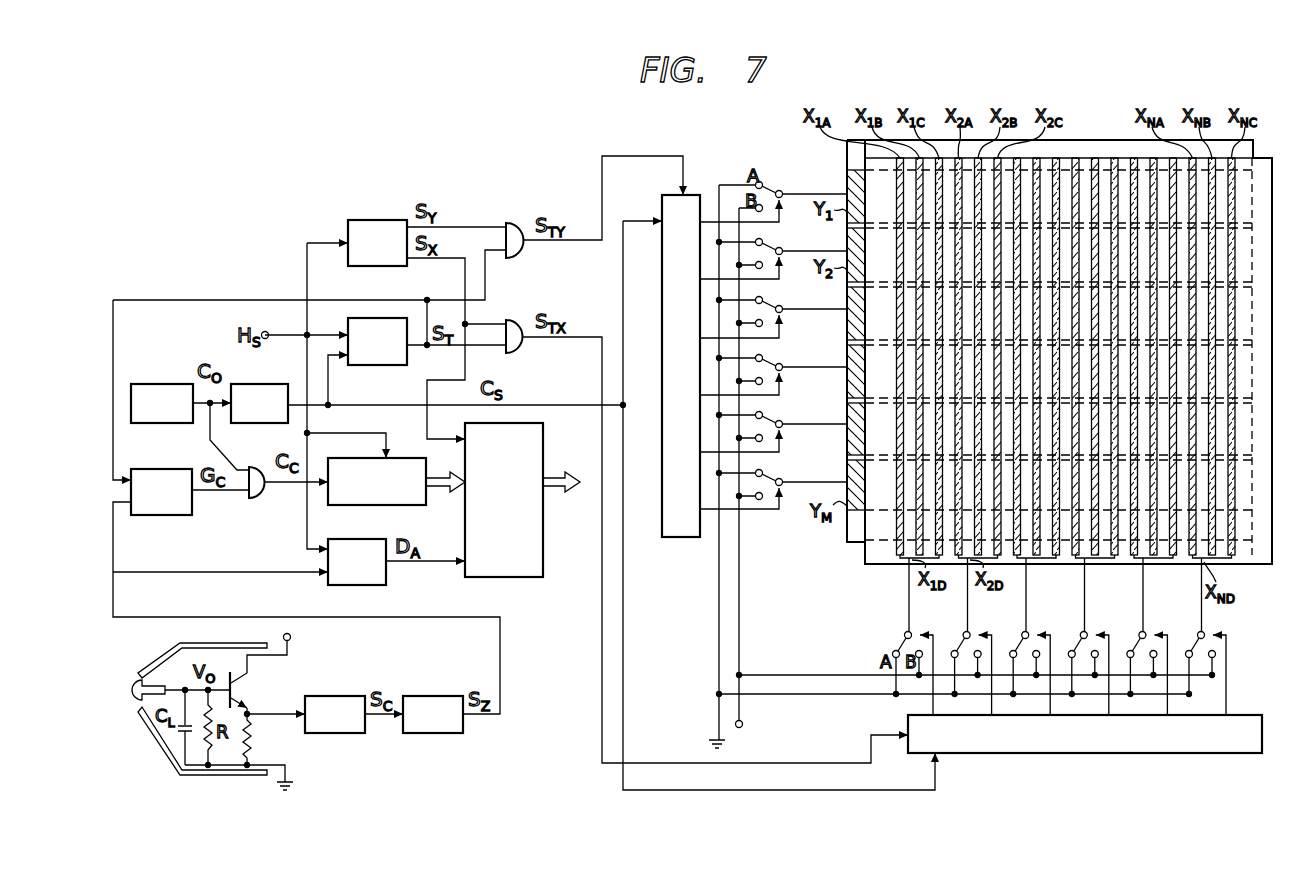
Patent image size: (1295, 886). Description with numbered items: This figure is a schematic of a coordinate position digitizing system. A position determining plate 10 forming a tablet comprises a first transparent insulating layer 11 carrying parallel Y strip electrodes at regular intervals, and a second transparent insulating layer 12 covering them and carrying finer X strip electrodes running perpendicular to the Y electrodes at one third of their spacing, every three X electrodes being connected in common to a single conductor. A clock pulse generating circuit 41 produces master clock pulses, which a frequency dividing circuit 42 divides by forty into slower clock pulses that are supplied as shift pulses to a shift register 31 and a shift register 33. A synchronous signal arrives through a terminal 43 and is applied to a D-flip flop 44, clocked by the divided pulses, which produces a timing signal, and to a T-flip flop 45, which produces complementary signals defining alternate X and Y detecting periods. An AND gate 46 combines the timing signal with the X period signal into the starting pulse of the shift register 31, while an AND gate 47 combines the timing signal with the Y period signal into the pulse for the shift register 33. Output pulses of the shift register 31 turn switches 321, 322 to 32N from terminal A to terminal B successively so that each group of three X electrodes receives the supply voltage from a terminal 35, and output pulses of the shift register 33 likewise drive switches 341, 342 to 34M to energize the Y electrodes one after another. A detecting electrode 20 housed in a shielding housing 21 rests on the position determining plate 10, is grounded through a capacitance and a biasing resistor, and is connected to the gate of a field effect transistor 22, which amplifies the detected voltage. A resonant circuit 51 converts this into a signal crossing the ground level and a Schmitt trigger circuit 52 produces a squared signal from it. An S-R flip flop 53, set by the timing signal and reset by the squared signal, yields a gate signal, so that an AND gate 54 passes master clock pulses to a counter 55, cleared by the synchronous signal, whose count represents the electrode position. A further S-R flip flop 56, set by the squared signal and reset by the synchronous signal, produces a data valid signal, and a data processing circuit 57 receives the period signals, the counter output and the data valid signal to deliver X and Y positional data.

The position determining plate 10 is at (868, 595).
The first transparent insulating layer 11 is at (846, 536).
The second transparent insulating layer 12 is at (1254, 560).
The detecting electrode 20 is at (134, 701).
The shielding housing 21 is at (198, 777).
The field effect transistor 22 is at (250, 680).
The shift register 31 is at (1188, 754).
The switch 321 is at (905, 636).
The switch 322 is at (962, 640).
The switch 32N is at (1197, 640).
The shift register 33 is at (681, 538).
The switch 341 is at (783, 196).
The switch 342 is at (783, 254).
The switch 34M is at (782, 488).
The terminal 35 is at (743, 727).
The clock pulse generating circuit 41 is at (168, 424).
The frequency dividing circuit 42 is at (257, 424).
The terminal 43 is at (265, 339).
The D-flip flop 44 is at (378, 366).
The T-flip flop 45 is at (378, 267).
The AND gate 46 is at (520, 350).
The AND gate 47 is at (520, 255).
The resonant circuit 51 is at (335, 734).
The Schmitt trigger circuit 52 is at (433, 734).
The S-R flip flop 53 is at (162, 516).
The AND gate 54 is at (262, 497).
The counter 55 is at (367, 506).
The S-R flip flop 56 is at (357, 586).
The data processing circuit 57 is at (503, 578).